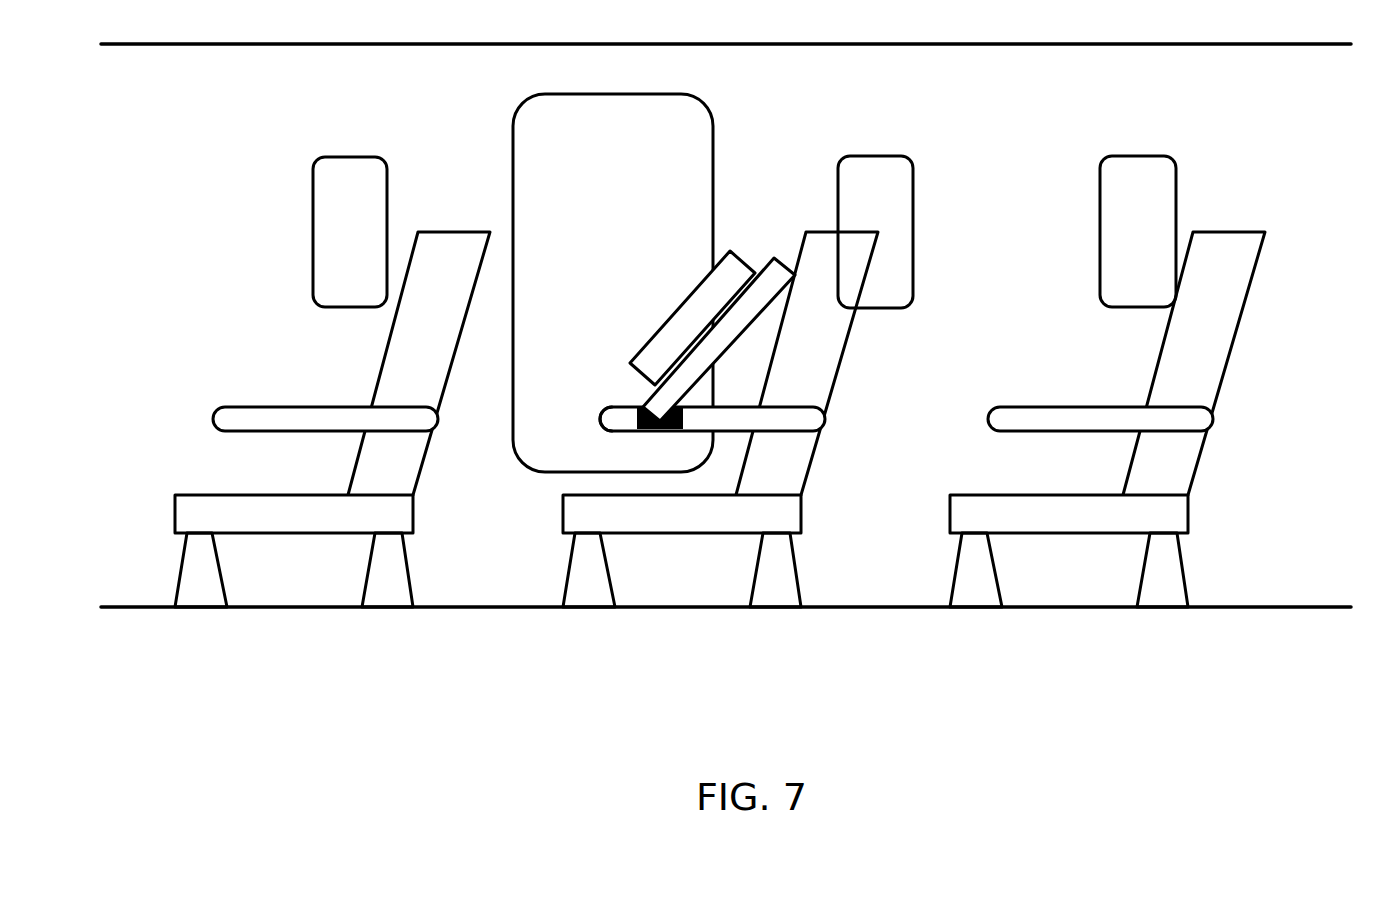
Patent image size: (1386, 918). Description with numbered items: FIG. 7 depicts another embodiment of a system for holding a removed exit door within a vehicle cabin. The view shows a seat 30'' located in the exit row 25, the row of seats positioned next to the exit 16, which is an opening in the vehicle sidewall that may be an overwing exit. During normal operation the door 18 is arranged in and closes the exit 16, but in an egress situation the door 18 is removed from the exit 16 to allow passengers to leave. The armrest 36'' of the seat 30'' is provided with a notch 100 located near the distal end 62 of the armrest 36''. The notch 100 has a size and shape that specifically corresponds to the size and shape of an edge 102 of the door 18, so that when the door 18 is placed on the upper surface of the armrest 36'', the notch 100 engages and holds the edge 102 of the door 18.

The exit 16 is at (714, 177).
The door 18 is at (773, 231).
The exit row 25 is at (701, 673).
The seat 30'' is at (747, 419).
The armrest 36'' is at (753, 432).
The distal end 62 is at (600, 411).
The notch 100 is at (668, 321).
The edge 102 is at (629, 387).